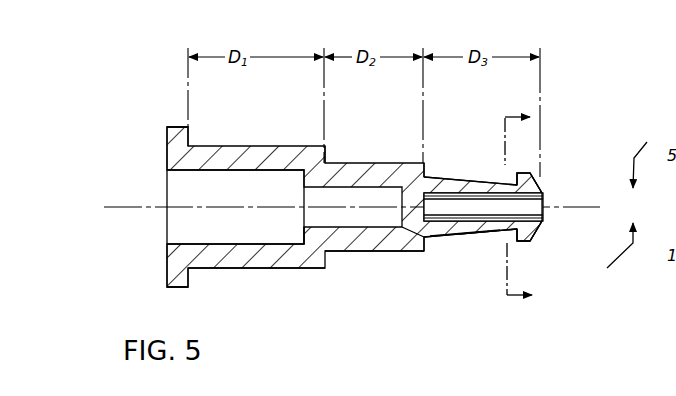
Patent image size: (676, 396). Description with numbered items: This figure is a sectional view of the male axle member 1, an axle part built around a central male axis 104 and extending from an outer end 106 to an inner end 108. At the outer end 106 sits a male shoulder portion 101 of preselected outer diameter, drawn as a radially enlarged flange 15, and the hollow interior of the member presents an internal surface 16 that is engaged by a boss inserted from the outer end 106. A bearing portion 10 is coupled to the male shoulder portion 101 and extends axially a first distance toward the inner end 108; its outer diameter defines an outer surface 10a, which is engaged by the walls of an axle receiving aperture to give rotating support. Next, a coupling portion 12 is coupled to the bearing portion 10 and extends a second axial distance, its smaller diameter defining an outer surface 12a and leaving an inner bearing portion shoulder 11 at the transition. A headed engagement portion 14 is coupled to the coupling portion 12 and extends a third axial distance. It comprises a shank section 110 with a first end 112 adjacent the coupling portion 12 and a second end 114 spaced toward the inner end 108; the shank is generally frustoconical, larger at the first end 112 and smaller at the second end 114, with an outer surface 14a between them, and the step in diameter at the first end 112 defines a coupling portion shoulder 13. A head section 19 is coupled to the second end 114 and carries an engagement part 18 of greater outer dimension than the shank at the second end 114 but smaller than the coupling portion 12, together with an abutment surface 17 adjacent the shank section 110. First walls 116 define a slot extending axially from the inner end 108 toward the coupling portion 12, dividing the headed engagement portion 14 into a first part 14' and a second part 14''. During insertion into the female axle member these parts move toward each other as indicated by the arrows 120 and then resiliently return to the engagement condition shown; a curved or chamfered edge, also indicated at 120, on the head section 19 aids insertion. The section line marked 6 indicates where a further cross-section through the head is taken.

The male axle member 1 is at (219, 147).
The bearing portion 10 is at (247, 268).
The outer surface of bearing portion 10a is at (318, 247).
The inner bearing portion shoulder 11 is at (326, 158).
The coupling portion 12 is at (404, 251).
The outer surface of coupling portion 12a is at (368, 252).
The coupling portion shoulder 13 is at (425, 170).
The headed engagement portion 14 is at (470, 254).
The first part of headed engagement portion 14' is at (470, 159).
The second part of headed engagement portion 14'' is at (465, 268).
The outer surface of shank section 14a is at (472, 243).
The flange 15 is at (168, 140).
The internal surface 16 is at (220, 170).
The abutment surface 17 is at (516, 181).
The engagement part 18 is at (534, 172).
The head section 19 is at (541, 190).
The male shoulder portion 101 is at (178, 127).
The male axis 104 is at (115, 207).
The outer end 106 is at (168, 281).
The inner end 108 is at (541, 187).
The shank section 110 is at (488, 237).
The first end of shank section 112 is at (430, 245).
The second end of shank section 114 is at (513, 238).
The first walls 116 is at (543, 204).
The arrows 120 is at (540, 233).
The section line 6- 6 is at (518, 205).